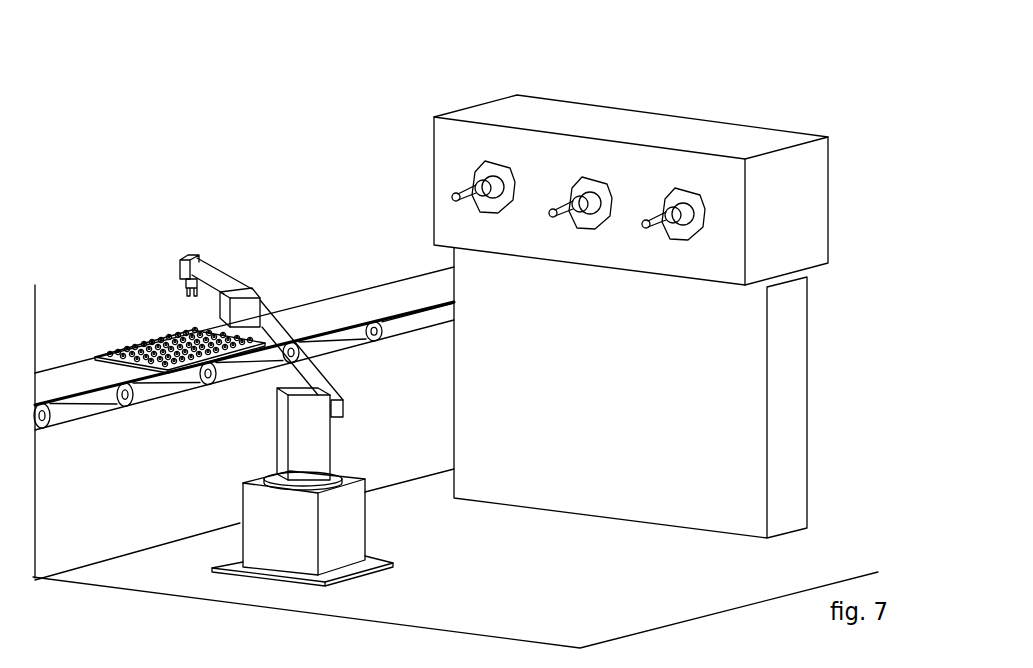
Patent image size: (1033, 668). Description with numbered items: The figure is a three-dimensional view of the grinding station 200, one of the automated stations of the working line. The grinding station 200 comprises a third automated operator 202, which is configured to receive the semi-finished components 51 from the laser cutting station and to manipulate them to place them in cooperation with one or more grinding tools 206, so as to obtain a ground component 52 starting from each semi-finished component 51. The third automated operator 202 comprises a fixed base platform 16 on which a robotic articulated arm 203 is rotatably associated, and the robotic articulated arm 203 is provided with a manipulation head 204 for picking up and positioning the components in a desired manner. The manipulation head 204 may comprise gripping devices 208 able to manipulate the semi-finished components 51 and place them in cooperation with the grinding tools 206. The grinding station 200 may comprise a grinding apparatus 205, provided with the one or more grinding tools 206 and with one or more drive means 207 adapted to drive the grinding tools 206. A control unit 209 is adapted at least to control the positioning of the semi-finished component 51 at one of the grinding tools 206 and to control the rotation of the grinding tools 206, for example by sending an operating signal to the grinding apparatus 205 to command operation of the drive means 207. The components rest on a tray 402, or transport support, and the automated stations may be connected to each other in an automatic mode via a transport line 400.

The grinding station 200 is at (821, 67).
The grinding apparatus 205 is at (715, 109).
The grinding tool 206 is at (454, 197).
The drive means 207 is at (678, 197).
The control unit 209 is at (790, 400).
The third automated operator 202 is at (280, 267).
The robotic articulated arm 203 is at (252, 275).
The manipulation head 204 is at (203, 246).
The gripping device 208 is at (185, 289).
The fixed base platform 16 is at (277, 550).
The transport line 400 is at (68, 381).
The tray 402 is at (100, 356).
The semi-finished component 51 is at (162, 339).
The ground component 52 is at (217, 346).